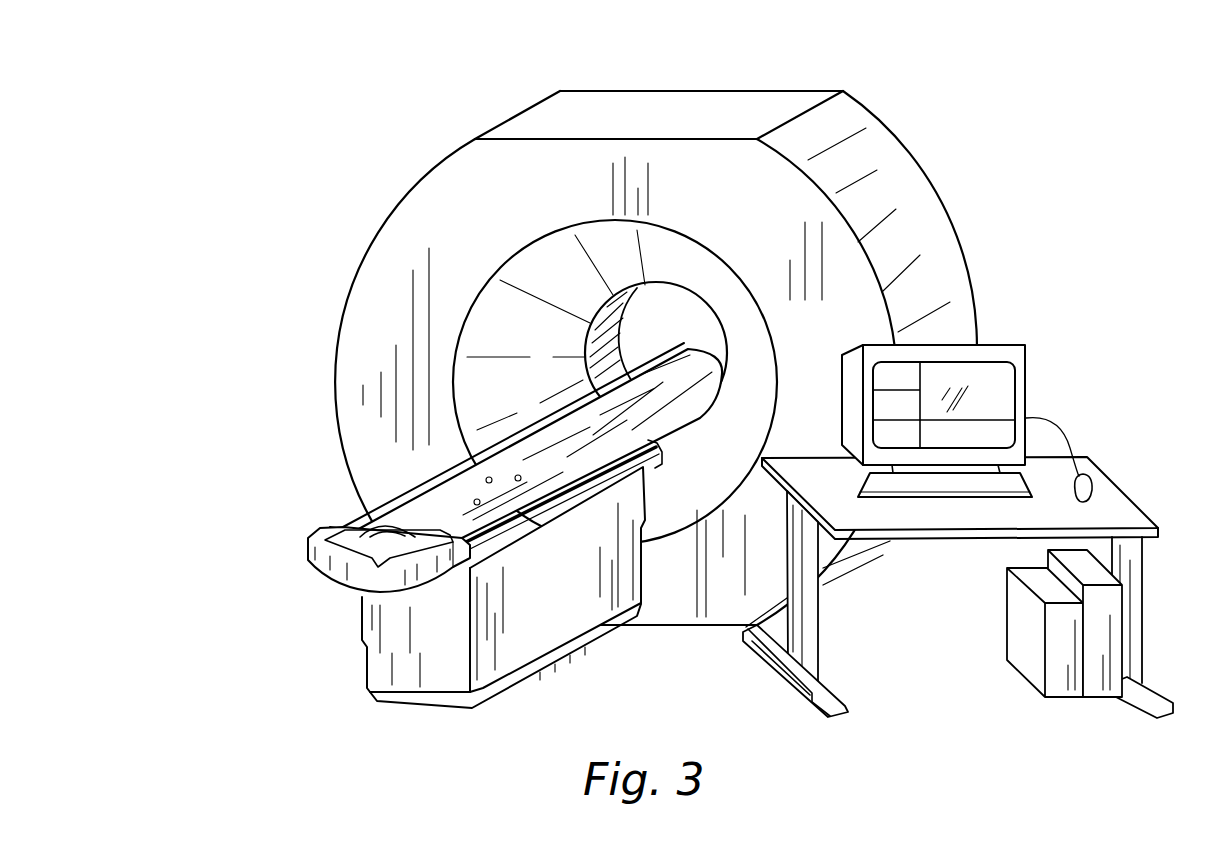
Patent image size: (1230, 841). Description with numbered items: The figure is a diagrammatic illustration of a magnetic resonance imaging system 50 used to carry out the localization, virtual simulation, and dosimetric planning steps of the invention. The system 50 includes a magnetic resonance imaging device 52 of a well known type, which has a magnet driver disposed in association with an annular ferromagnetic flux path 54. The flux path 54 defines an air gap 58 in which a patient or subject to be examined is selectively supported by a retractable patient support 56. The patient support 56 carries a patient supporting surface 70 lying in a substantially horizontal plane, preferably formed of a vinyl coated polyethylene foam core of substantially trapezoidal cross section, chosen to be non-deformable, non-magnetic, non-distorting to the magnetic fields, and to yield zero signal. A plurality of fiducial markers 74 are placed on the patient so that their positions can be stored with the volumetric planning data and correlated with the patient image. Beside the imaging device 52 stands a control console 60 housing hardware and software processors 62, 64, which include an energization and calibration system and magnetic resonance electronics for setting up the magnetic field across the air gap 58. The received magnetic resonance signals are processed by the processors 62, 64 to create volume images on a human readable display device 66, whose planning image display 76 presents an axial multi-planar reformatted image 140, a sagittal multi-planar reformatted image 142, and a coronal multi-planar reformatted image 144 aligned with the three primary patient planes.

The system 50 is at (995, 168).
The magnetic resonance imaging device 52 is at (697, 115).
The annular ferromagnetic flux path 54 is at (467, 208).
The retractable patient support 56 is at (298, 512).
The air gap 58 is at (658, 320).
The control console 60 is at (1110, 432).
The hardware and software processor 62 is at (1058, 680).
The hardware and software processor 64 is at (1108, 685).
The human readable display device 66 is at (949, 381).
The patient supporting surface 70 is at (443, 505).
The fiducial markers 74 is at (503, 472).
The planning image display 76 is at (1020, 381).
The axial multi-planar reformatted image 140 is at (898, 378).
The sagittal multi-planar reformatted image 142 is at (898, 408).
The coronal multi-planar reformatted image 144 is at (898, 438).